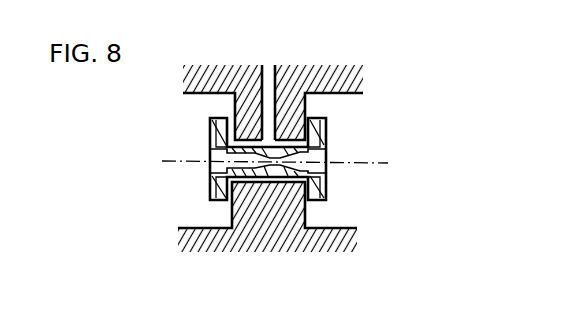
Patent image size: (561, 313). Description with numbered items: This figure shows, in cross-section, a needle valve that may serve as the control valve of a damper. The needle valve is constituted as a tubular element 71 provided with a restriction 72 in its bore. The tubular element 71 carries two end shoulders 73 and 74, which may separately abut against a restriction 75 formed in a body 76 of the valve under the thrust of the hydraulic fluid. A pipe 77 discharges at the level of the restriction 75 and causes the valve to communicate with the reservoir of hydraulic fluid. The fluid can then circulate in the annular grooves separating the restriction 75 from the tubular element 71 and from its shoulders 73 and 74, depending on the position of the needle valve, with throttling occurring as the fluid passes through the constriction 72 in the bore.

The tubular element 71 is at (225, 198).
The restriction 72 is at (285, 163).
The end shoulder 73 is at (217, 143).
The end shoulder 74 is at (317, 133).
The restriction 75 is at (288, 108).
The body 76 is at (240, 90).
The pipe 77 is at (277, 77).